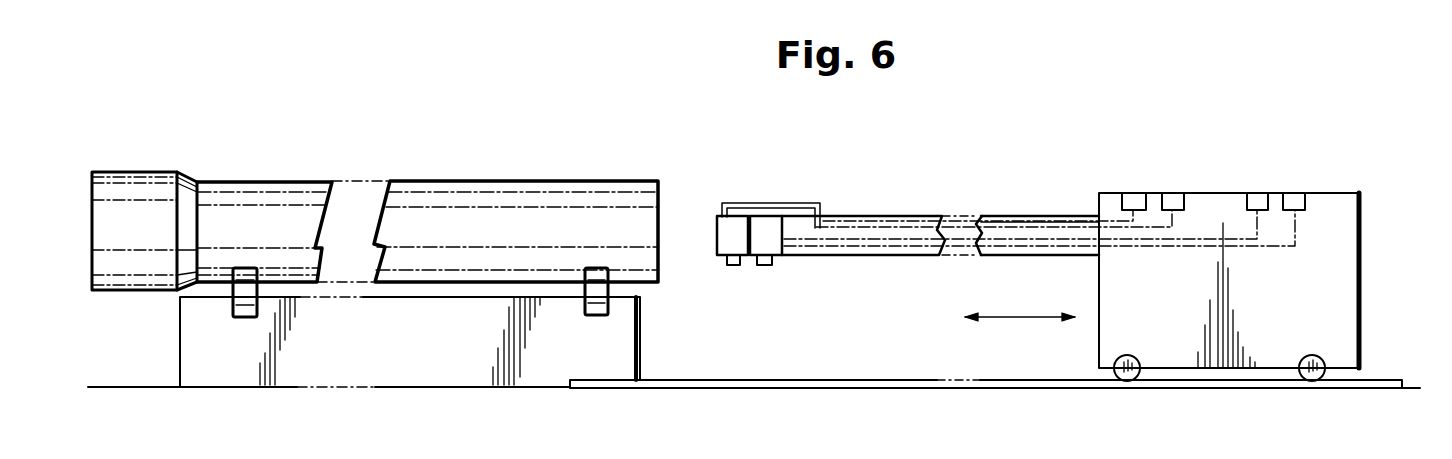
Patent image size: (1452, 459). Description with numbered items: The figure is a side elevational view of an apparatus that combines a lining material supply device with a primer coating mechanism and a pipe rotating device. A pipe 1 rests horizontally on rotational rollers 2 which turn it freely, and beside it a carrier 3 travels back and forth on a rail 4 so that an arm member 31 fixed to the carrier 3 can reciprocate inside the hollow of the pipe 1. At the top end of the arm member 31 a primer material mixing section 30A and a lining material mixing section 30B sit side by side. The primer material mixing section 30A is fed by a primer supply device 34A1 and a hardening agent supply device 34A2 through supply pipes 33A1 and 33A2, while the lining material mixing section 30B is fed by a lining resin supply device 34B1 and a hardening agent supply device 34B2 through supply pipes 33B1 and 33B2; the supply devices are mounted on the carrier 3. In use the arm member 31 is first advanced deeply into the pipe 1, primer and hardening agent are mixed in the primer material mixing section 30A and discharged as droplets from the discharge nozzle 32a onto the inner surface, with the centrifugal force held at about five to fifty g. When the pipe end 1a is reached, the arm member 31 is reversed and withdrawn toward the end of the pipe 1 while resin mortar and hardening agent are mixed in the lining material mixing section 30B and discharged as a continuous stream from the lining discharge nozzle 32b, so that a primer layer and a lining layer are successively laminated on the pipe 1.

The pipe end portion 1a is at (137, 190).
The pipe 1 is at (475, 205).
The rotational rollers 2 is at (243, 300).
The carrier 3 is at (1363, 285).
The rail 4 is at (827, 380).
The primer material mixing section 30A is at (725, 230).
The lining material mixing section 30B is at (770, 225).
The arm member 31 is at (882, 215).
The discharge nozzle 32a is at (732, 265).
The lining discharge nozzle 32b is at (768, 263).
The supply pipe 33A1 is at (993, 218).
The supply pipe 33A2 is at (1047, 225).
The supply pipe 33B1 is at (1000, 243).
The supply pipe 33B2 is at (1057, 247).
The primer supply device 34A1 is at (1130, 200).
The hardening agent supply device 34A2 is at (1175, 200).
The lining resin supply device 34B1 is at (1255, 200).
The hardening agent supply device 34B2 is at (1293, 200).